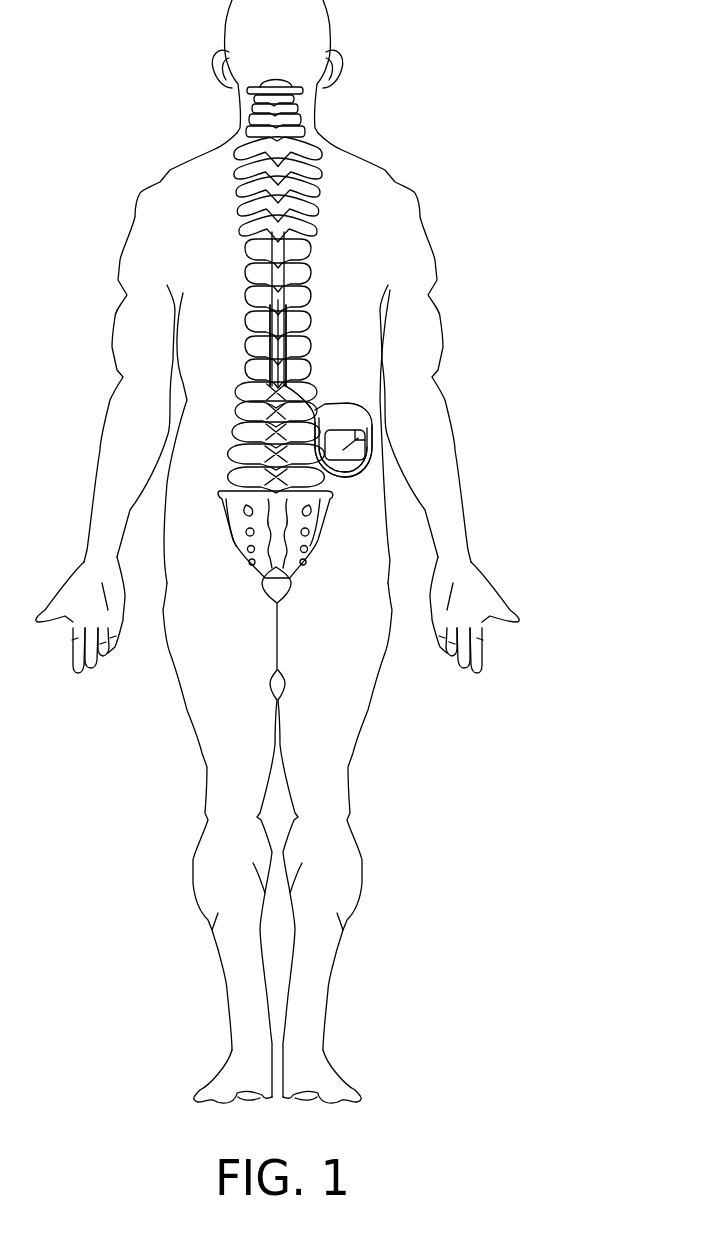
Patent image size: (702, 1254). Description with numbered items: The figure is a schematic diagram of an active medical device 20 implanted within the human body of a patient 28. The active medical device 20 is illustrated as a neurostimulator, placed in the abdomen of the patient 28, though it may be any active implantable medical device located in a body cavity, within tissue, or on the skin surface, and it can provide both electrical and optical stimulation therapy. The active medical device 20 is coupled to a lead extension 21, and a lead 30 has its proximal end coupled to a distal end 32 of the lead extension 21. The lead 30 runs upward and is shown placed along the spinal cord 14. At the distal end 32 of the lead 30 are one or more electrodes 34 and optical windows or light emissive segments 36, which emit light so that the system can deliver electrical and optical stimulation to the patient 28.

The patient 28 is at (358, 160).
The spinal cord 14 is at (300, 278).
The electrodes 34 is at (300, 333).
The light emissive segments 36 is at (300, 333).
The lead 30 is at (315, 400).
The distal end 32 is at (315, 420).
The active medical device 20 is at (367, 442).
The lead extension 21 is at (360, 468).